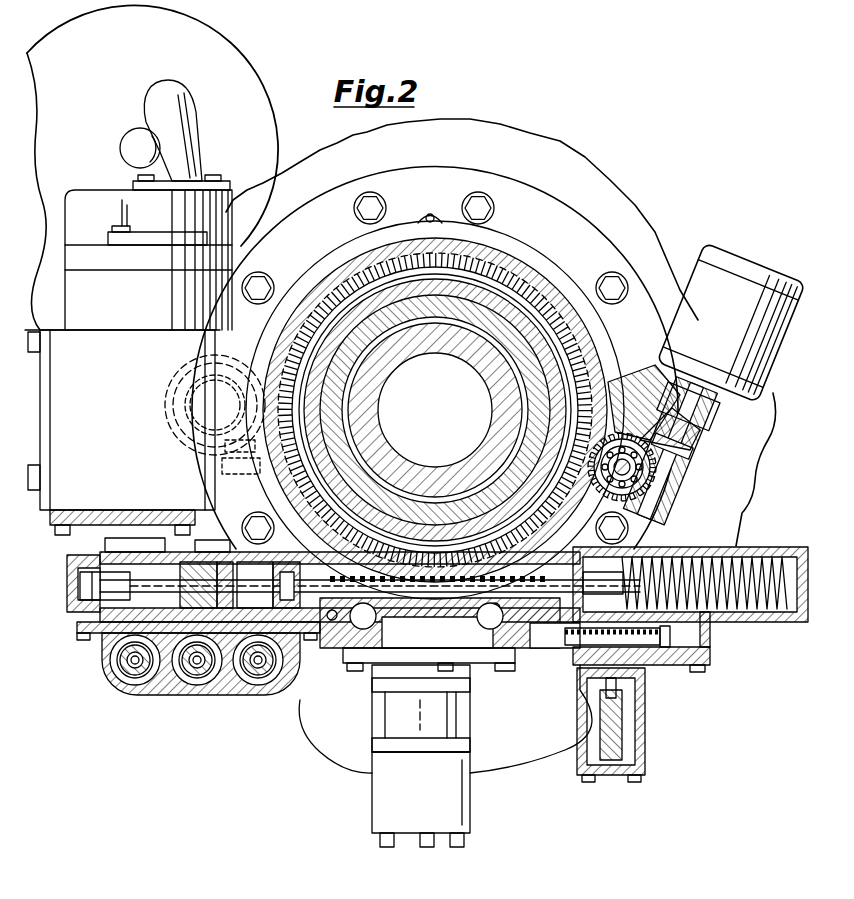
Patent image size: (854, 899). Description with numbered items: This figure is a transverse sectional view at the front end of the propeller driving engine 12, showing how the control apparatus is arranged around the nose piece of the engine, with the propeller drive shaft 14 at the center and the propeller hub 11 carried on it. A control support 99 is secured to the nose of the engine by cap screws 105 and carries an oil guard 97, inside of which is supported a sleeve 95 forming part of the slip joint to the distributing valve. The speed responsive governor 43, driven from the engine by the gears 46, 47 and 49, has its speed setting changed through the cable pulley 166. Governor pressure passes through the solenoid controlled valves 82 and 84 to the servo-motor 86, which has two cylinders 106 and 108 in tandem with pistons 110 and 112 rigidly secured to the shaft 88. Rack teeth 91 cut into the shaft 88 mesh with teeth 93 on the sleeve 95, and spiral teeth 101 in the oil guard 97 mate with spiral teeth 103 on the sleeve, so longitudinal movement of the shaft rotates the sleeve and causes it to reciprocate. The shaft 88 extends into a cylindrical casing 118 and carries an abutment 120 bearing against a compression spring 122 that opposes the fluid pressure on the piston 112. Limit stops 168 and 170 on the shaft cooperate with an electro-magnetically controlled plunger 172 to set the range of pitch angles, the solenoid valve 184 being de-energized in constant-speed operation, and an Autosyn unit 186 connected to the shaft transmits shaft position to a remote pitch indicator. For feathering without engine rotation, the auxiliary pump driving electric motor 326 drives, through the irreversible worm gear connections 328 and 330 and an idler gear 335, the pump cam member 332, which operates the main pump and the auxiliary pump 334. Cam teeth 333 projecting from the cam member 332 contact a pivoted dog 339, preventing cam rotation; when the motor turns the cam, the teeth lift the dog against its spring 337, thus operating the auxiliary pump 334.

The hub 11 is at (532, 415).
The propeller driving engine 12 is at (576, 142).
The propeller drive shaft 14 is at (461, 347).
The speed responsive governor 43 is at (57, 248).
The gear 46 is at (180, 402).
The gear 47 is at (302, 327).
The gear 49 is at (189, 357).
The solenoid controlled valve 82 is at (114, 693).
The solenoid controlled valve 84 is at (262, 697).
The servo-motor 86 is at (59, 578).
The shaft 88 is at (303, 566).
The rack teeth 91 is at (402, 592).
The teeth 93 is at (450, 592).
The sleeve 95 is at (601, 350).
The oil guard 97 is at (502, 253).
The control support 99 is at (448, 192).
The spiral teeth 101 is at (522, 254).
The spiral teeth 103 is at (537, 265).
The cap screws 105 is at (372, 200).
The cylinder 106 is at (97, 596).
The cylinder 108 is at (370, 587).
The piston 110 is at (150, 550).
The piston 112 is at (212, 552).
The cylindrical casing 118 is at (774, 637).
The abutment 120 is at (617, 623).
The compression spring 122 is at (767, 552).
The cable pulley 166 is at (247, 73).
The limit stop 168 is at (584, 668).
The limit stop 170 is at (662, 683).
The electro-magnetically controlled plunger 172 is at (578, 729).
The solenoid valve 184 is at (198, 697).
The Autosyn unit 186 is at (362, 794).
The auxiliary pump driving electric motor 326 is at (732, 247).
The gear connection 328 is at (696, 483).
The gear 330 is at (602, 364).
The pump cam member 332 is at (600, 373).
The cam teeth 333 is at (254, 365).
The auxiliary pump 334 is at (197, 474).
The idler gear 335 is at (638, 510).
The spring 337 is at (204, 487).
The pivoted dog 339 is at (239, 457).